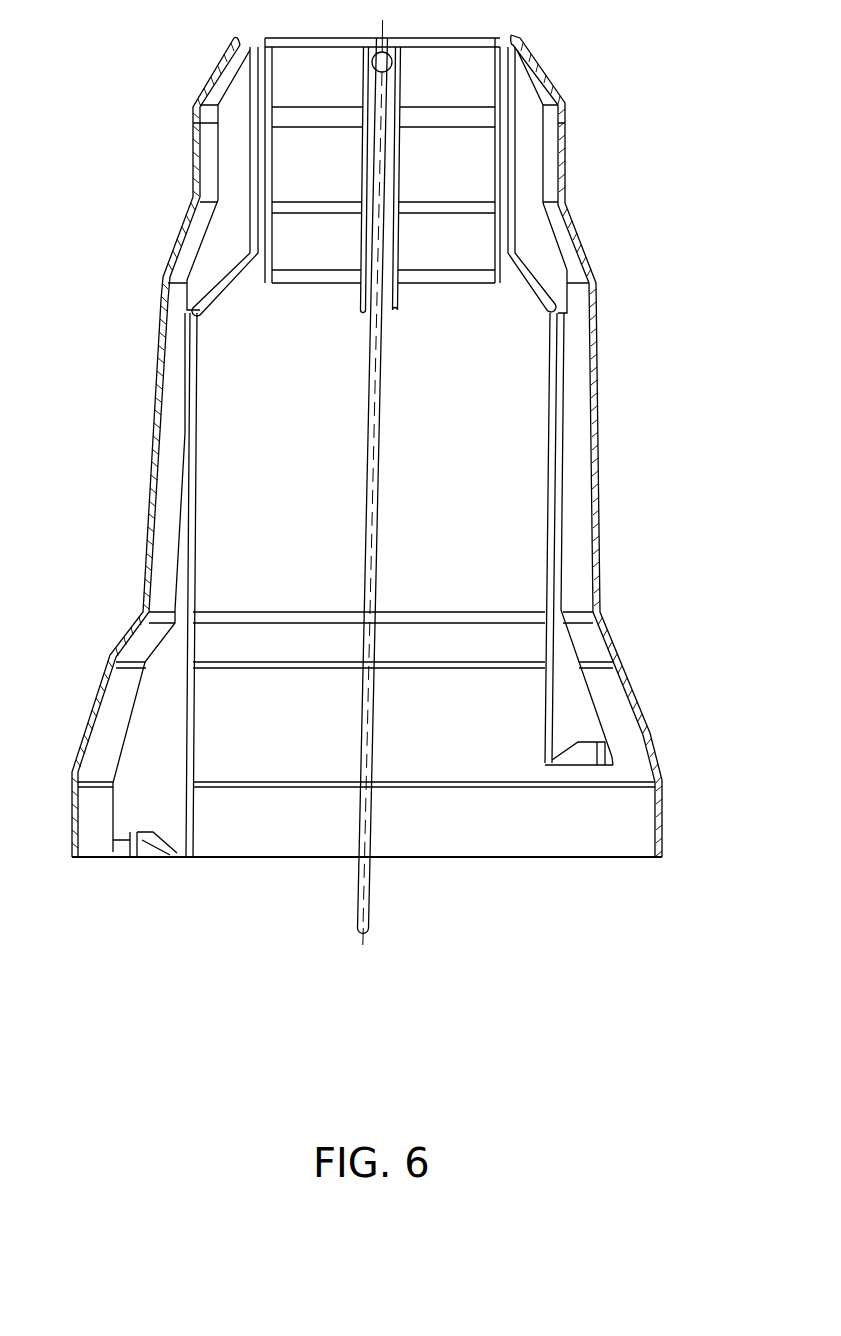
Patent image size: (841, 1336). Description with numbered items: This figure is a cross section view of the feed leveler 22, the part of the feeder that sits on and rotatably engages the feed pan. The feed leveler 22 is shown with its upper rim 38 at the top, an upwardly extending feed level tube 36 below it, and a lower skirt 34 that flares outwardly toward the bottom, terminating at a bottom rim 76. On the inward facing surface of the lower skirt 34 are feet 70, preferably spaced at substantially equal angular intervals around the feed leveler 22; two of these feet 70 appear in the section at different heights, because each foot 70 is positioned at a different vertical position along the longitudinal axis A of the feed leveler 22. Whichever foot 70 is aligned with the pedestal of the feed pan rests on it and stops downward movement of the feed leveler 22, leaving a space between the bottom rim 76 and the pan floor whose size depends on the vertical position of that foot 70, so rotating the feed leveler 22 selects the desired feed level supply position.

The feed leveler 22 is at (153, 350).
The lower skirt 34 is at (653, 728).
The feed level tube 36 is at (597, 460).
The upper rim 38 is at (553, 97).
The feet 70 is at (110, 817).
The bottom rim 76 is at (583, 858).
The longitudinal axis A is at (372, 892).